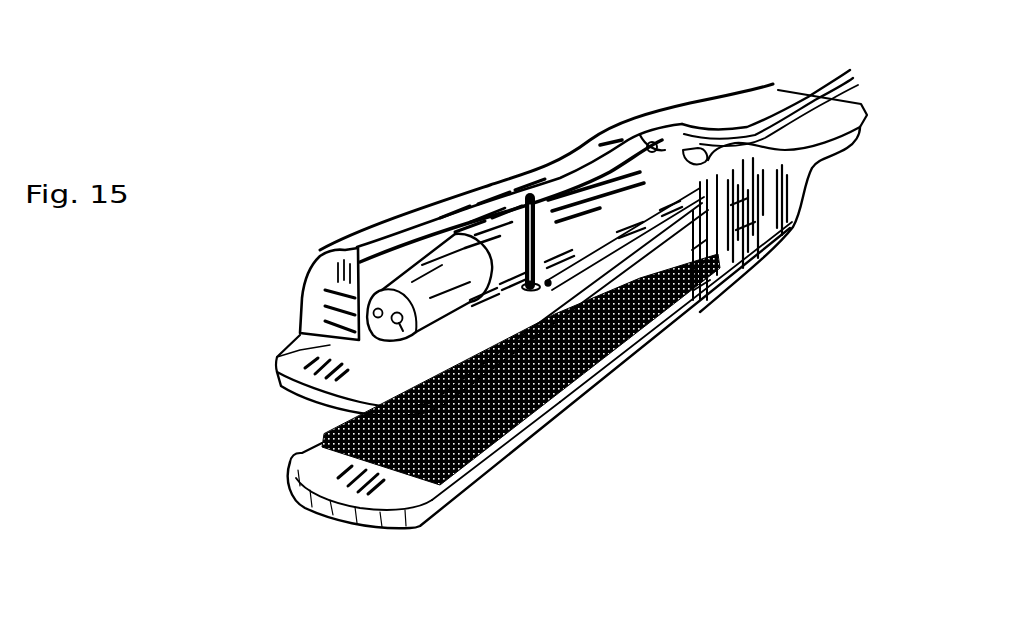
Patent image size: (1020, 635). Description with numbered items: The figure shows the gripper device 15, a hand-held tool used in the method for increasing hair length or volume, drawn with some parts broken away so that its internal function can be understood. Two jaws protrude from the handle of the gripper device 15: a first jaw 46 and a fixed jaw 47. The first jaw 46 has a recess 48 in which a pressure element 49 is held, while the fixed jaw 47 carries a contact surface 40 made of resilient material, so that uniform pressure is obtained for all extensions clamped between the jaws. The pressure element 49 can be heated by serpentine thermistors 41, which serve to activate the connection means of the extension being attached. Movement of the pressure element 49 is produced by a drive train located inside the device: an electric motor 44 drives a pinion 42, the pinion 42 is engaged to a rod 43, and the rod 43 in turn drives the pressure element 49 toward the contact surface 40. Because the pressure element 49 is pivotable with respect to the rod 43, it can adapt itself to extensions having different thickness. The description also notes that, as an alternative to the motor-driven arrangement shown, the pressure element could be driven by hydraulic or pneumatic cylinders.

The gripper device 15 is at (675, 97).
The contact surface 40 is at (607, 374).
The serpentine thermistors 41 is at (556, 428).
The pinion 42 is at (538, 258).
The rod 43 is at (542, 282).
The electric motor 44 is at (438, 237).
The first jaw 46 is at (293, 360).
The fixed jaw 47 is at (292, 502).
The recess 48 is at (325, 410).
The pressure element 49 is at (695, 303).